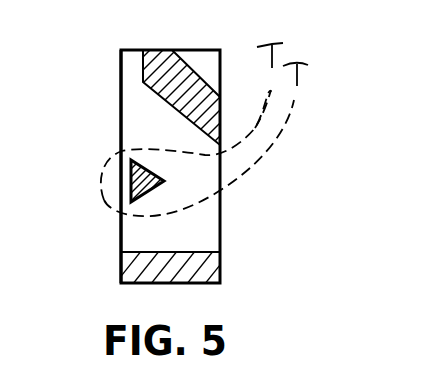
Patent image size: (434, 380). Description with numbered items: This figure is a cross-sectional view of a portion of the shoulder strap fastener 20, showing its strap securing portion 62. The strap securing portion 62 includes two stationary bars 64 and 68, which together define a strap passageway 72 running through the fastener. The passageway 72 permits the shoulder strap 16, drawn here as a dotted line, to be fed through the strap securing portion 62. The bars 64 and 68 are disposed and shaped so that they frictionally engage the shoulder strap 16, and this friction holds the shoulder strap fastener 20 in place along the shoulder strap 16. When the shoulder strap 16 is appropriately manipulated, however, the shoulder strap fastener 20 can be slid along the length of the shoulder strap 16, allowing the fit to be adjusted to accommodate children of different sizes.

The shoulder strap 16 is at (289, 109).
The shoulder strap fastener 20 is at (121, 265).
The strap securing portion 62 is at (243, 230).
The stationary bar 64 is at (200, 72).
The stationary bar 68 is at (123, 180).
The strap passageway 72 is at (139, 119).